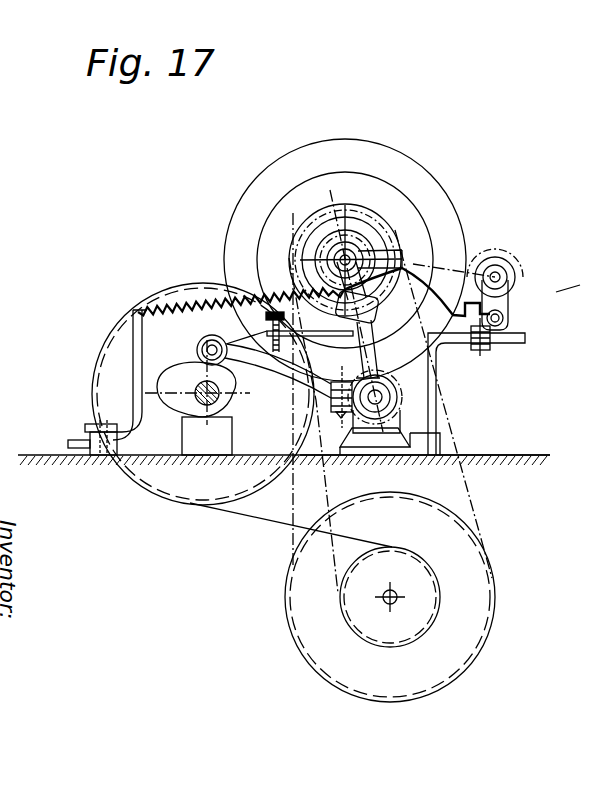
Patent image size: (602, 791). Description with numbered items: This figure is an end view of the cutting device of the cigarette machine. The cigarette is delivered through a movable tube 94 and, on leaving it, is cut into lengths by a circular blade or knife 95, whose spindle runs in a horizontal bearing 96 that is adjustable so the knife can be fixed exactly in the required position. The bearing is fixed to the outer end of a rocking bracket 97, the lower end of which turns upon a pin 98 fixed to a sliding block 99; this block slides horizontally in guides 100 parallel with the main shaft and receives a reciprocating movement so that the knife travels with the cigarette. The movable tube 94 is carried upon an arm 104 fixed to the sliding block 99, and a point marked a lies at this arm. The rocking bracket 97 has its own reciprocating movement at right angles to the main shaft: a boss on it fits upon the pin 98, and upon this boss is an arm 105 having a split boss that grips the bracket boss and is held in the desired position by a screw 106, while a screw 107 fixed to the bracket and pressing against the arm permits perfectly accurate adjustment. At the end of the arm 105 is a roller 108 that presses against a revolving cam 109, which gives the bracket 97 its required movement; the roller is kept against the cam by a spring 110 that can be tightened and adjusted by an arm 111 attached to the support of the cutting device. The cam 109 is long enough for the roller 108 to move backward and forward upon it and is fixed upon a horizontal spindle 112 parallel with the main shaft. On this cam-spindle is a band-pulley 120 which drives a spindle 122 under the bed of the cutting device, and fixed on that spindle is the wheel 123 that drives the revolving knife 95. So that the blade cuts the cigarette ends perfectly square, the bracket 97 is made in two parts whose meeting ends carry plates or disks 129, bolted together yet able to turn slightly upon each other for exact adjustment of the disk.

The movable tube 94 is at (514, 266).
The circular blade or knife 95 is at (393, 163).
The horizontal bearing 96 is at (318, 216).
The rocking bracket 97 is at (371, 368).
The pin 98 is at (400, 394).
The sliding block 99 is at (400, 432).
The guides 100 is at (412, 448).
The arm 104 is at (470, 254).
The arm 105 is at (274, 366).
The screw 106 is at (343, 378).
The screw 107 is at (267, 331).
The roller 108 is at (197, 349).
The revolving cam 109 is at (182, 425).
The spring 110 is at (188, 309).
The arm 111 is at (142, 383).
The horizontal spindle 112 is at (218, 402).
The band-pulley 120 is at (134, 479).
The spindle 122 is at (393, 598).
The wheel 123 is at (495, 575).
The plates or disks 129 is at (377, 318).
The cable a is at (586, 288).